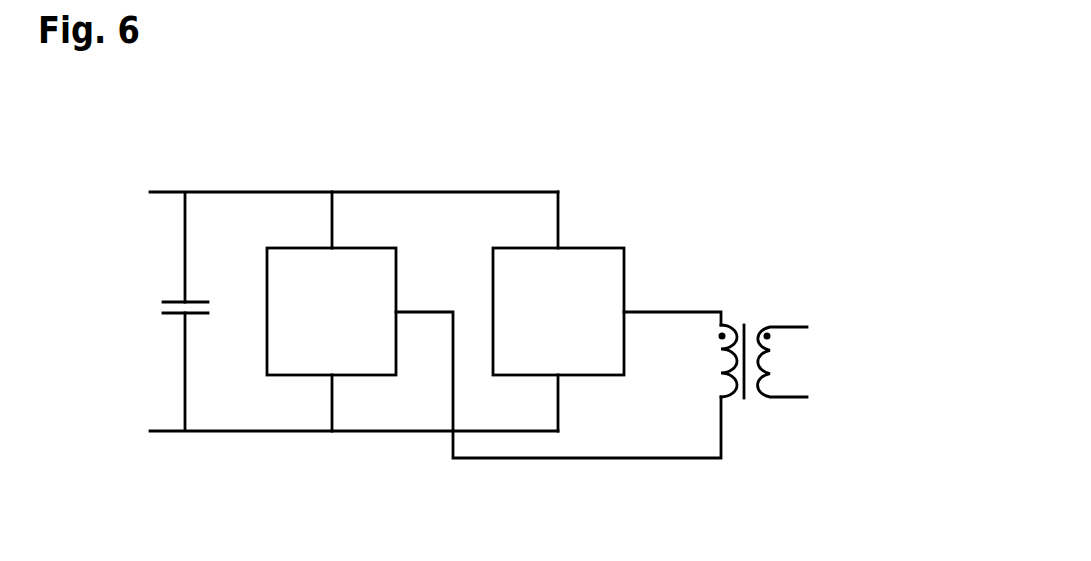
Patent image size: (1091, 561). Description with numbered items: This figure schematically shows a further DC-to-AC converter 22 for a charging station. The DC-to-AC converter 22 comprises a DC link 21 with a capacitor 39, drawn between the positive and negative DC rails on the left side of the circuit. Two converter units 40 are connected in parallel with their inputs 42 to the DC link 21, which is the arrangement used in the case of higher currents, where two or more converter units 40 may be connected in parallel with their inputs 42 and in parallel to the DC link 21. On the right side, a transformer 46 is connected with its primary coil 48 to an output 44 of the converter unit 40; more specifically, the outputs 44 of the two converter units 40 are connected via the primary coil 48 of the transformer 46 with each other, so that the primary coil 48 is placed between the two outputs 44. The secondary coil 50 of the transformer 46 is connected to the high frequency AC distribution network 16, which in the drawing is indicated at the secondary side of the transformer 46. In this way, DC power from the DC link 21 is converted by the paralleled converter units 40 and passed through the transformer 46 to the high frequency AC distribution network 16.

The high frequency AC distribution network 16 is at (900, 294).
The DC link 21 is at (132, 133).
The DC-to-AC converter 22 is at (768, 124).
The capacitor 39 is at (183, 301).
The converter unit 40 is at (367, 248).
The inputs 42 is at (332, 218).
The output 44 is at (658, 312).
The transformer 46 is at (778, 276).
The primary coil 48 is at (730, 400).
The secondary coil 50 is at (770, 357).